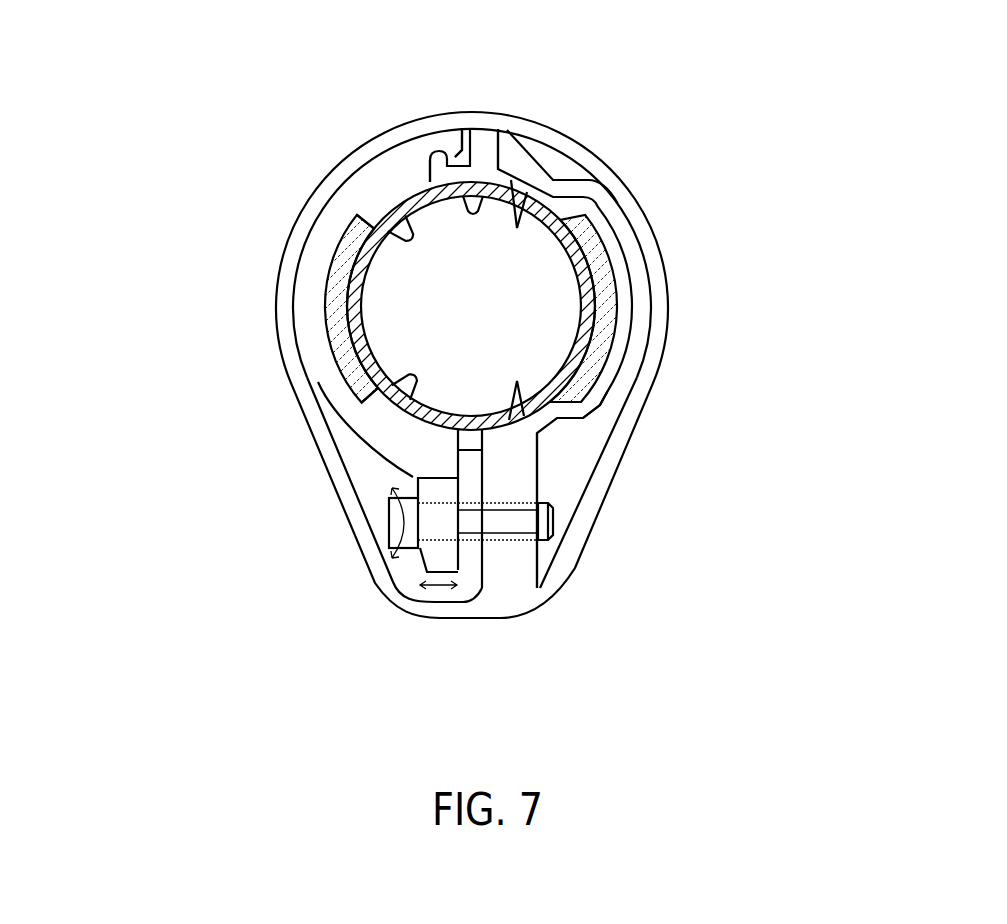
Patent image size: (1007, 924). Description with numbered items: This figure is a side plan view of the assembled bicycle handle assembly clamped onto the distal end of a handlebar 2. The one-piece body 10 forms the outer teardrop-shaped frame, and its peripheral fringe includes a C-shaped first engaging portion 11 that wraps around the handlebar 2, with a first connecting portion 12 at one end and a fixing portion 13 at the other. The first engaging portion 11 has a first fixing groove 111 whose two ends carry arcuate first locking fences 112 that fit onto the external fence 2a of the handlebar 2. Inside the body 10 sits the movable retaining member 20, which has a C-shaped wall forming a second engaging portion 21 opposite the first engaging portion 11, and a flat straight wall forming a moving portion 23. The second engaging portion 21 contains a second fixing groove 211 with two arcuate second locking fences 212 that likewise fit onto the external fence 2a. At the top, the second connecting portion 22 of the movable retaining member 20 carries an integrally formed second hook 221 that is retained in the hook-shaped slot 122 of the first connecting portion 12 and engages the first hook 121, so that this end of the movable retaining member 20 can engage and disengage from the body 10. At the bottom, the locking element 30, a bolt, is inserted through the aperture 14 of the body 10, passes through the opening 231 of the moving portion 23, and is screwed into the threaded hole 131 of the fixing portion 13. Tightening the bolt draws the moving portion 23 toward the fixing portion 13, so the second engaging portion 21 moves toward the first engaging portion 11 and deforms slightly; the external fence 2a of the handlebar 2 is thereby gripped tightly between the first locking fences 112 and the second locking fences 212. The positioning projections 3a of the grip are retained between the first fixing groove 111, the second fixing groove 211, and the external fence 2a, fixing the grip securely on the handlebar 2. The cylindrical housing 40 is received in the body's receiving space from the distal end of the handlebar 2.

The body 10 is at (625, 181).
The movable retaining member 20 is at (297, 244).
The second engaging portion 21 is at (292, 342).
The second fixing groove 211 is at (322, 247).
The second locking fences 212 is at (343, 212).
The second connecting portion 22 is at (426, 150).
The second hook 221 is at (457, 153).
The first hook 121 is at (436, 162).
The slot 122 is at (486, 130).
The first connecting portion 12 is at (503, 172).
The first locking fences 112 is at (525, 192).
The first fixing groove 111 is at (625, 395).
The first engaging portion 11 is at (640, 360).
The fixing portion 13 is at (543, 557).
The threaded hole 131 is at (525, 520).
The aperture 14 is at (372, 530).
The locking element 30 is at (390, 530).
The moving portion 23 is at (460, 557).
The opening 231 is at (436, 548).
The housing 40 is at (567, 245).
The handlebar 2 is at (595, 265).
The external fence 2a is at (607, 327).
The positioning projections 3a is at (333, 300).